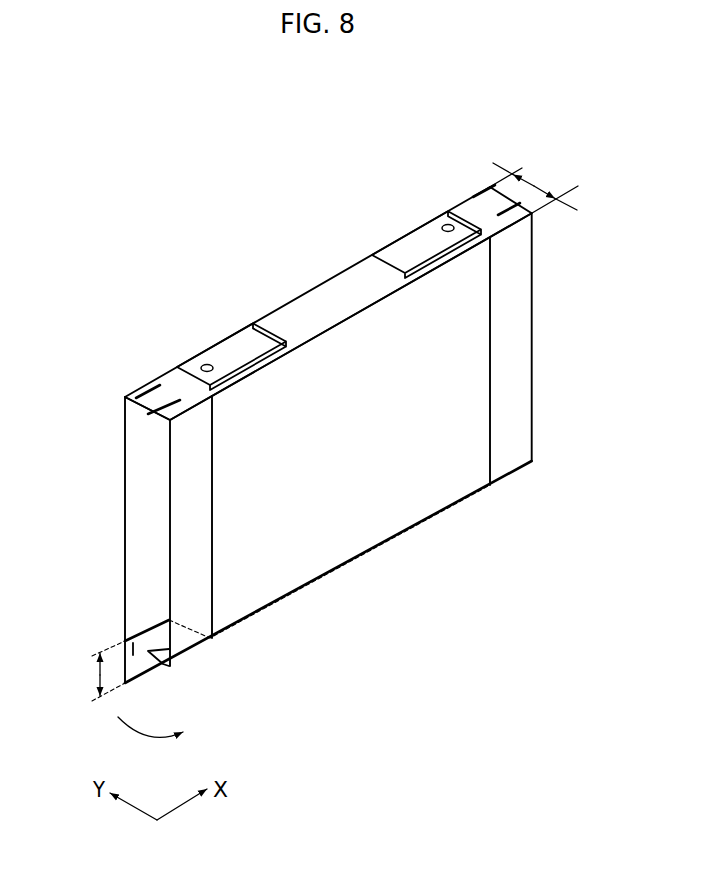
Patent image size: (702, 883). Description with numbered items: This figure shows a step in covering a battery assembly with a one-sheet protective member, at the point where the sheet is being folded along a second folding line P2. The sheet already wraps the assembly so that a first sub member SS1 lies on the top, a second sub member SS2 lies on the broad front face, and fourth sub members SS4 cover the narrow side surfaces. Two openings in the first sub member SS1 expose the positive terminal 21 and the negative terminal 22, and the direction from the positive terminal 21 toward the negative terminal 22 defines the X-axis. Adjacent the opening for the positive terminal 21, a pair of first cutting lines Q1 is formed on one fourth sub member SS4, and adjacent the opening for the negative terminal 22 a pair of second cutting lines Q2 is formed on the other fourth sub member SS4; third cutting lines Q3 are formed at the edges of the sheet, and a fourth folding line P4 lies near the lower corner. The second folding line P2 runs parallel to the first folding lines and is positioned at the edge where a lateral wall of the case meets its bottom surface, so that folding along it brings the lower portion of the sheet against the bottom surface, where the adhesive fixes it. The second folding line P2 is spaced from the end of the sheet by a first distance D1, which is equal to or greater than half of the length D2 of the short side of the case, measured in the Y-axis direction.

The positive terminal 21 is at (230, 347).
The negative terminal 22 is at (400, 245).
The first sub member SS1 is at (320, 292).
The second sub member SS2 is at (327, 535).
The fourth sub member SS4 is at (523, 337).
The second folding line P2 is at (160, 622).
The fourth folding line P4 is at (173, 662).
The first cutting line Q1 is at (171, 400).
The second cutting line Q2 is at (510, 210).
The third cutting line Q3 is at (128, 642).
The first distance D1 is at (97, 671).
The length of short side of case D2 is at (533, 188).